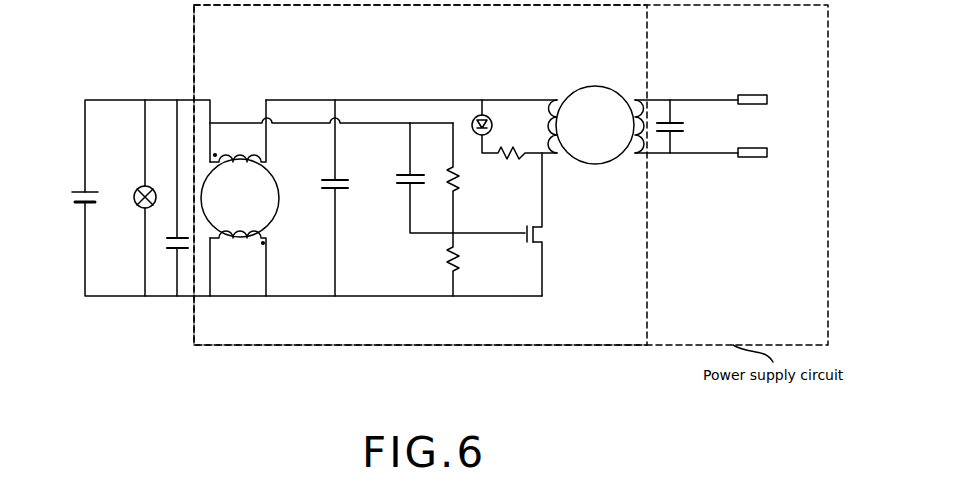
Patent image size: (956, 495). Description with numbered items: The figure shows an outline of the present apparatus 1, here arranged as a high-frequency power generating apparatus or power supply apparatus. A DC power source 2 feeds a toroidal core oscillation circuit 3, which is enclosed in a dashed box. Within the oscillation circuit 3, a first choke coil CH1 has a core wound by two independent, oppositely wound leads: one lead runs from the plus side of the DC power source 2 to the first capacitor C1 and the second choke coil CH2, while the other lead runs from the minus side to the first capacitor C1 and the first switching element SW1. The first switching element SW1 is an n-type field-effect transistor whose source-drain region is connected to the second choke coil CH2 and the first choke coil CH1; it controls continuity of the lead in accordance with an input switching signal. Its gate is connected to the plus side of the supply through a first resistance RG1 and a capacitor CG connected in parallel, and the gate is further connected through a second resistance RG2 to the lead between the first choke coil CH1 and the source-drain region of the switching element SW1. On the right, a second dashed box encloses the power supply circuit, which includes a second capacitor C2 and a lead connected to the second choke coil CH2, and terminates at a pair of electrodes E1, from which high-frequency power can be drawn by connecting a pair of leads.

The plasma generating apparatus 1 is at (537, 350).
The DC power source 2 is at (72, 194).
The toroidal core oscillation circuit 3 is at (397, 345).
The first capacitor C1 is at (323, 193).
The second capacitor C2 is at (683, 118).
The capacitor CG is at (400, 187).
The first resistance RG1 is at (457, 190).
The second resistance RG2 is at (457, 270).
The first switching element SW1 is at (544, 232).
The first choke coil CH1 is at (247, 213).
The second choke coil CH2 is at (600, 157).
The pair of electrodes E1 is at (764, 106).